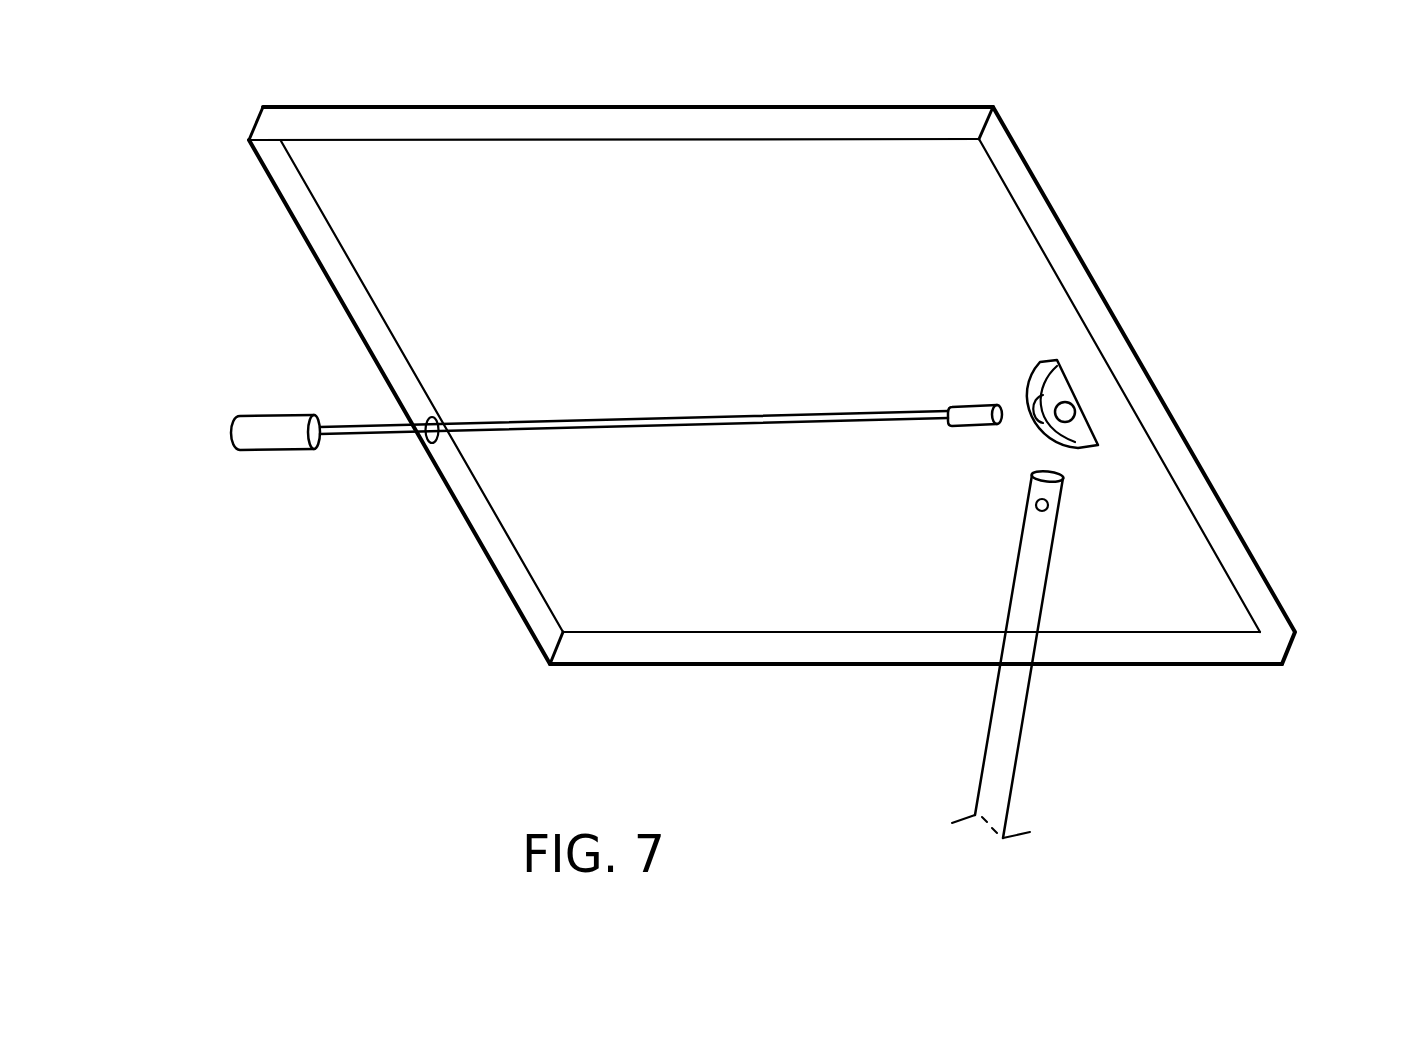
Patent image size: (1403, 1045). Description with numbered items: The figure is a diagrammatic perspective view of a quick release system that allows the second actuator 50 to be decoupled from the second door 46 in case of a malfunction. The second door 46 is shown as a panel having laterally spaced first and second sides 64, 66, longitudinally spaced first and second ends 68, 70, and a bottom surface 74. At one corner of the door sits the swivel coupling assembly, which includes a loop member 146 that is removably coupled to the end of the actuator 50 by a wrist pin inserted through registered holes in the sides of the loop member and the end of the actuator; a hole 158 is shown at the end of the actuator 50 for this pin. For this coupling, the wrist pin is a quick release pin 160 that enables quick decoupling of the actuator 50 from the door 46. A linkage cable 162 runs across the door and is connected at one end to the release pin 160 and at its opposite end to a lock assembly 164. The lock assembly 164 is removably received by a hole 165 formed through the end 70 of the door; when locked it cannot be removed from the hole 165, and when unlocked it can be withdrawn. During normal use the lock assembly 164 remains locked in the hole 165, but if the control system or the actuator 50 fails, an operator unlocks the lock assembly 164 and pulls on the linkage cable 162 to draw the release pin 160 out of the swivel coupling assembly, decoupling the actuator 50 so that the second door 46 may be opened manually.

The second door 46 is at (758, 387).
The second side 66 is at (895, 123).
The first end 68 is at (1205, 507).
The first side 64 is at (1205, 664).
The second end 70 is at (278, 169).
The bottom surface 74 is at (697, 275).
The linkage cable 162 is at (740, 425).
The lock assembly 164 is at (250, 447).
The hole 165 is at (427, 445).
The quick release pin 160 is at (965, 408).
The loop member 146 is at (1062, 375).
The second actuator 50 is at (1125, 605).
The post aperture 158 is at (1057, 497).